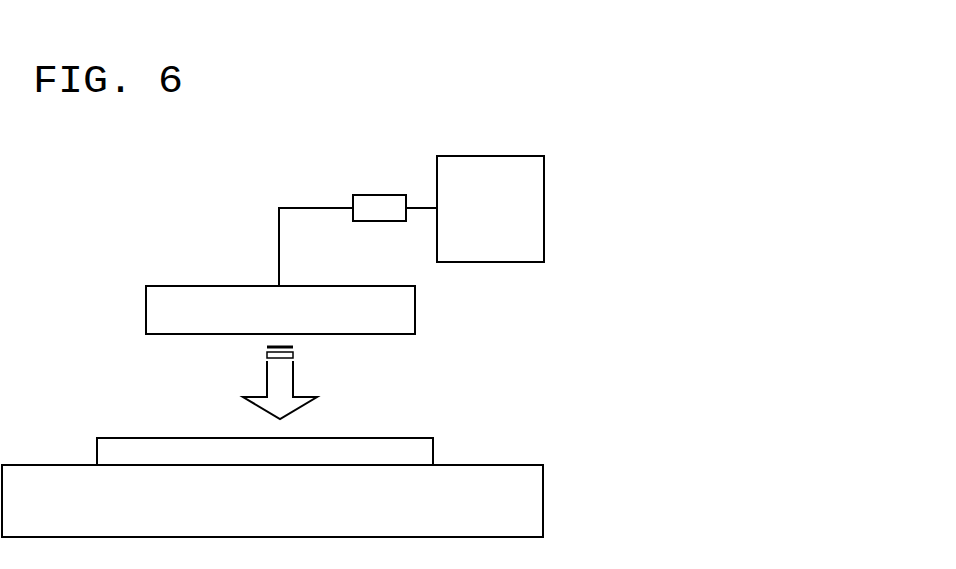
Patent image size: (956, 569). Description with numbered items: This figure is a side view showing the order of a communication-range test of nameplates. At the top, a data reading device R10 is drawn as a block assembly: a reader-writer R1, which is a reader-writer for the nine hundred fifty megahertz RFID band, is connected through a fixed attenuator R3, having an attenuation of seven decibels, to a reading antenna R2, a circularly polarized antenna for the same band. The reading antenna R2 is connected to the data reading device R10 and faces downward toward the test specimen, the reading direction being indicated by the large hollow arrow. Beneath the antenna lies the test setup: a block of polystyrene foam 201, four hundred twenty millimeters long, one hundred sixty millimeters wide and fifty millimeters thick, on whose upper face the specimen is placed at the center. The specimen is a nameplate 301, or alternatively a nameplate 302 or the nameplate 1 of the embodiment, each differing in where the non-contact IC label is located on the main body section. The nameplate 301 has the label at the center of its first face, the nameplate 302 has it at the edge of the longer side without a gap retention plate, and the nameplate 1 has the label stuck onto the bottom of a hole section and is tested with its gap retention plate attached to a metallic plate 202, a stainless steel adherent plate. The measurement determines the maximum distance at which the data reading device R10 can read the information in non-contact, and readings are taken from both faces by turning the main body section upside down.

The data reading device R10 is at (563, 277).
The reader-writer R1 is at (533, 206).
The reading antenna R2 is at (405, 312).
The fixed attenuator R3 is at (380, 206).
The nameplate 301 is at (428, 453).
The nameplate 302 is at (265, 451).
The nameplate 1 is at (265, 451).
The polystyrene foam 201 is at (525, 499).
The metallic plate 202 is at (272, 501).